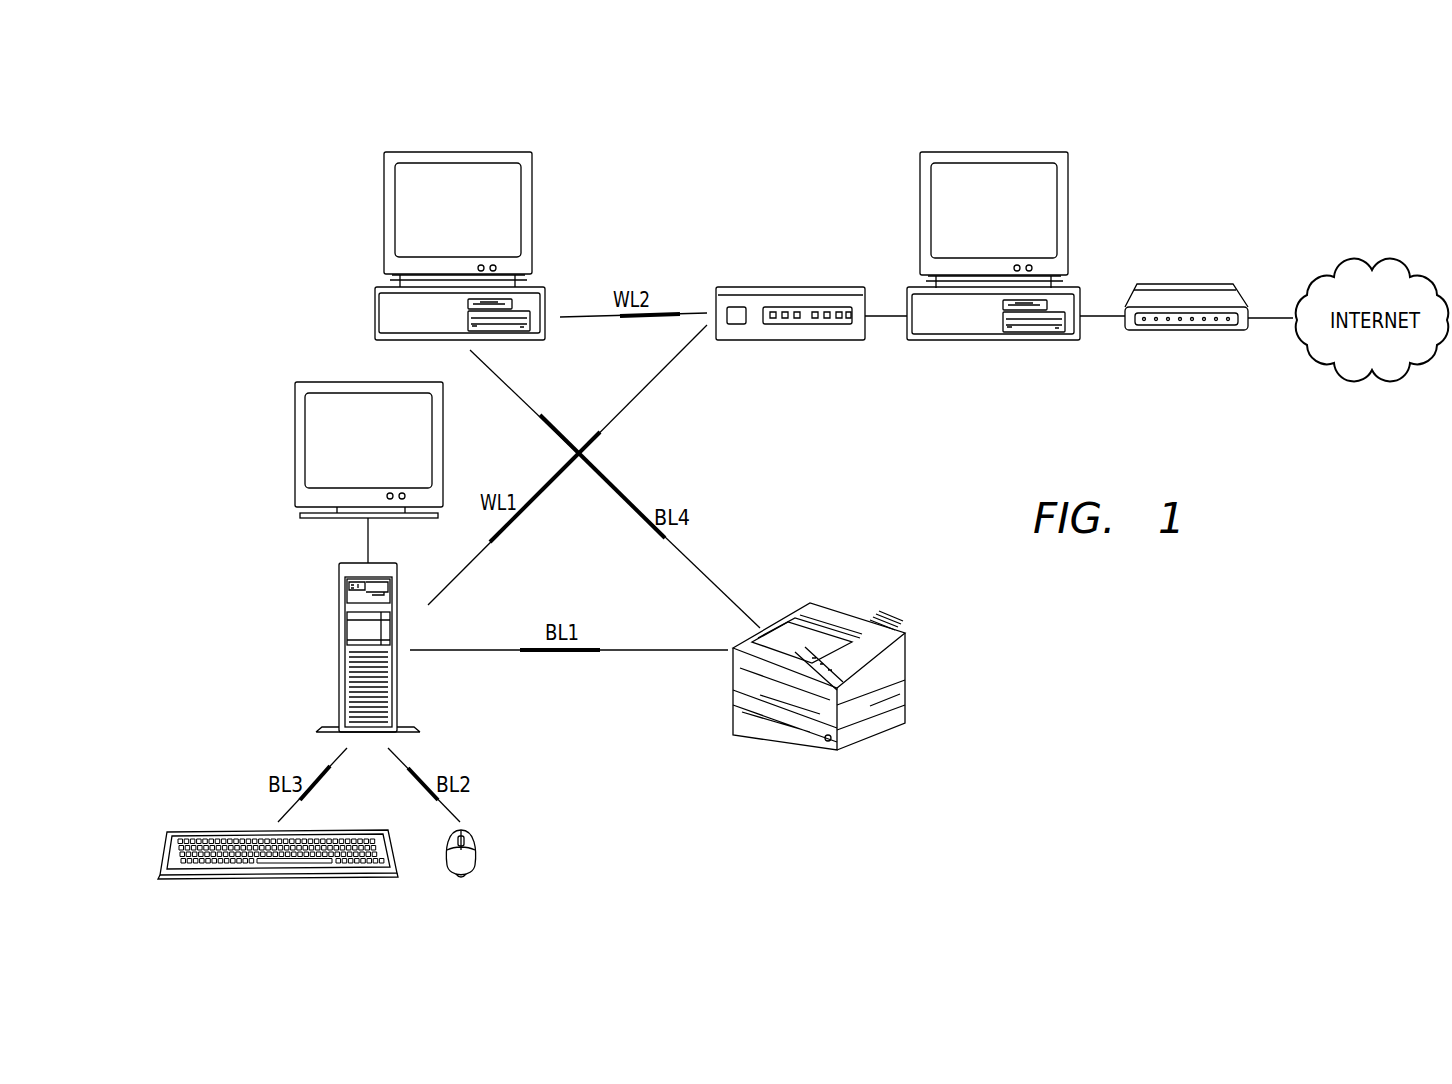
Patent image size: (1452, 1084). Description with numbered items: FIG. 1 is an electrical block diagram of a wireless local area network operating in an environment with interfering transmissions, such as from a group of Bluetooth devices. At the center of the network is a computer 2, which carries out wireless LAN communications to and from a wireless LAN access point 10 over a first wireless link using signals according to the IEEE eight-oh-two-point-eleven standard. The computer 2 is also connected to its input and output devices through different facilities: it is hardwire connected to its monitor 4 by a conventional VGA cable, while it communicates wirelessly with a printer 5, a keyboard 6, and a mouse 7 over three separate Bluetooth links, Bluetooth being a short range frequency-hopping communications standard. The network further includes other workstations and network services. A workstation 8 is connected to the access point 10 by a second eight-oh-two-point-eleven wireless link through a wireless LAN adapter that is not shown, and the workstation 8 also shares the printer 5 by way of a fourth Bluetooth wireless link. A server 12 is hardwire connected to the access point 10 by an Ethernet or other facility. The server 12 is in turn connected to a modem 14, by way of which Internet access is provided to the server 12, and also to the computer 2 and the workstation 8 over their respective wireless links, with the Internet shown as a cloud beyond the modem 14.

The computer 2 is at (339, 627).
The monitor 4 is at (295, 444).
The printer 5 is at (900, 672).
The keyboard 6 is at (163, 852).
The mouse 7 is at (476, 855).
The workstation 8 is at (457, 152).
The wireless LAN access point 10 is at (788, 287).
The server 12 is at (995, 152).
The modem 14 is at (1190, 291).